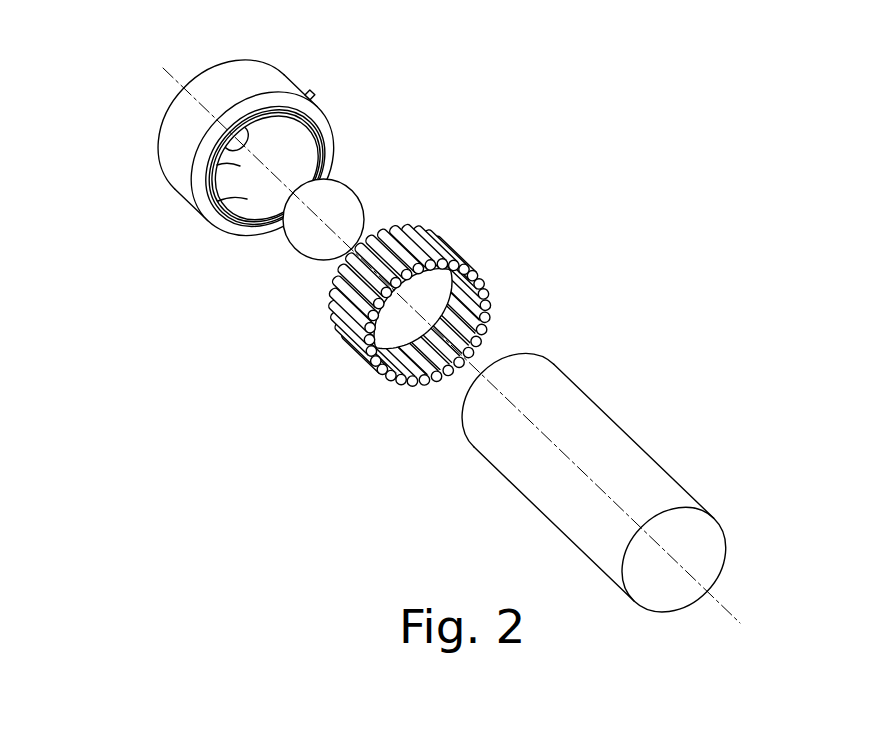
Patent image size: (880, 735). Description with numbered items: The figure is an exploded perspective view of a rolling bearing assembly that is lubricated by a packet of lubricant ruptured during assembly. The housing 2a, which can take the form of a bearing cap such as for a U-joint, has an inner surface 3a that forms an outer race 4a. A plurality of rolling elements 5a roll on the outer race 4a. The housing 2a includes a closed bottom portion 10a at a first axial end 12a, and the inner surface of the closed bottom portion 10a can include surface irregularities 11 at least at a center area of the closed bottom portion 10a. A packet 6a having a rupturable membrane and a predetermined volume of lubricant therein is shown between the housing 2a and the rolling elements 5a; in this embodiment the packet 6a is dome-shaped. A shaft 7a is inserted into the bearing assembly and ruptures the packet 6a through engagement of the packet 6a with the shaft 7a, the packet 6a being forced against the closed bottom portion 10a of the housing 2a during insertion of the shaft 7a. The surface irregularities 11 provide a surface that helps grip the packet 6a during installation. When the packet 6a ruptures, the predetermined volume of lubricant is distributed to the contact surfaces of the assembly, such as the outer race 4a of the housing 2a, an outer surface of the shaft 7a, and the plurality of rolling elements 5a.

The housing 2a is at (277, 92).
The inner surface 3a is at (277, 200).
The outer race 4a is at (236, 167).
The plurality of rolling elements 5a is at (433, 243).
The packet 6a is at (316, 239).
The shaft 7a is at (563, 405).
The closed bottom portion 10a is at (243, 163).
The surface irregularities 11 is at (238, 127).
The first axial end 12a is at (170, 103).